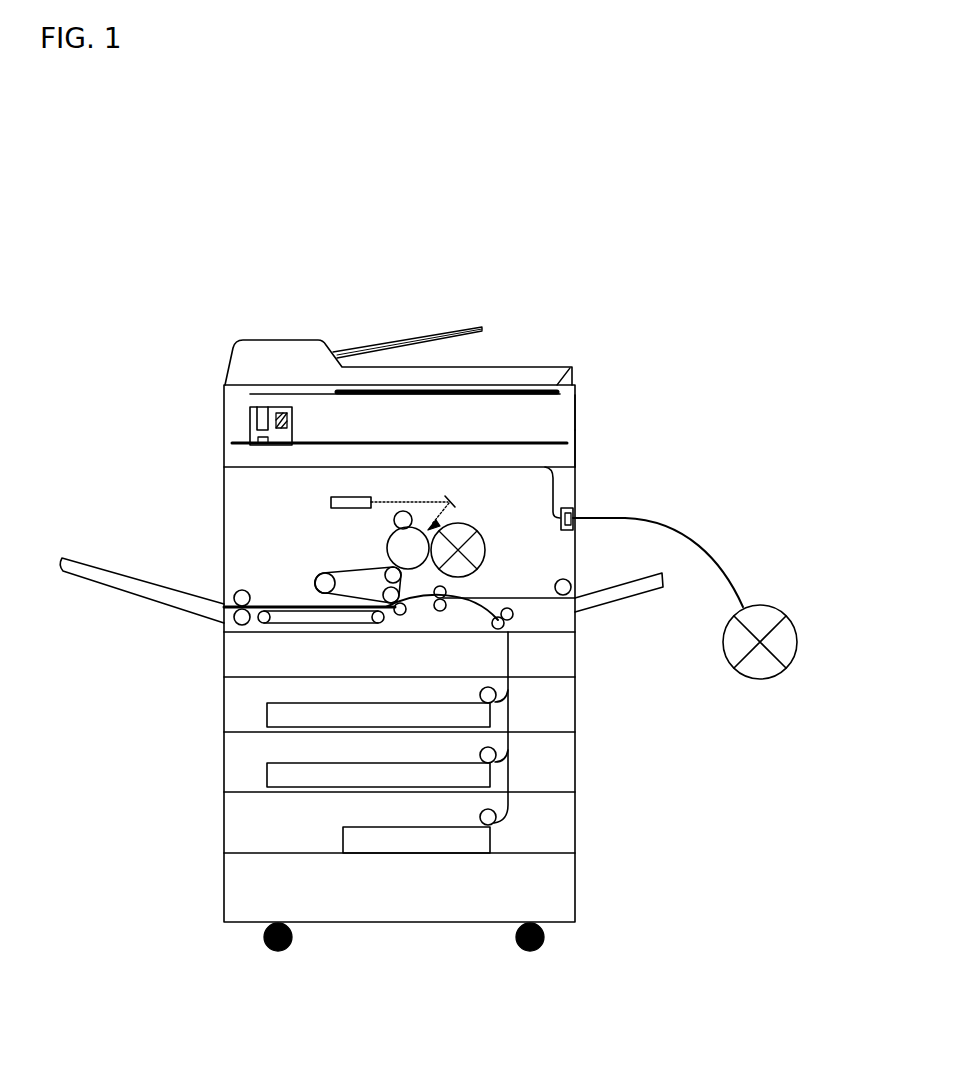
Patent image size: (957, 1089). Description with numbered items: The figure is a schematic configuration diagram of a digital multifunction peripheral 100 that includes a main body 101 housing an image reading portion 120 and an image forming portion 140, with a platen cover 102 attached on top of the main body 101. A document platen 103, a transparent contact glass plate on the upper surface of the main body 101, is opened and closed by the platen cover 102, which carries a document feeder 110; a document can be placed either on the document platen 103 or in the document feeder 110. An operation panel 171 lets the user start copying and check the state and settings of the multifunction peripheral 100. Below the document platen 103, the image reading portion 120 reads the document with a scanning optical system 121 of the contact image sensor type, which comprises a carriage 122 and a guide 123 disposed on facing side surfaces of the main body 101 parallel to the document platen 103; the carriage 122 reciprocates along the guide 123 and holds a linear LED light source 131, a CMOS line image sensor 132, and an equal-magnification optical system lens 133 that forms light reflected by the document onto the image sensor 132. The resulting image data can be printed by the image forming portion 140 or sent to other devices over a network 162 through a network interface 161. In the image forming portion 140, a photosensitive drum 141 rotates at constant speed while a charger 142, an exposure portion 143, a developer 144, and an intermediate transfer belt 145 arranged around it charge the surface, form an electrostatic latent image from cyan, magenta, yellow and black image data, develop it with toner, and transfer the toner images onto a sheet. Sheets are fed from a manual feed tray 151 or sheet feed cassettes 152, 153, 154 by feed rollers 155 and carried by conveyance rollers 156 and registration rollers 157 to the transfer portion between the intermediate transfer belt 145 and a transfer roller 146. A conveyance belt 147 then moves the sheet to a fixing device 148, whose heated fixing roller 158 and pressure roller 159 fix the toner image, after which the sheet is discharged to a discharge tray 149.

The multifunction peripheral 100 is at (568, 279).
The main body 101 is at (207, 478).
The platen cover 102 is at (209, 345).
The document platen 103 is at (506, 386).
The document feeder 110 is at (276, 340).
The image reading portion 120 is at (578, 440).
The scanning optical system 121 is at (569, 412).
The carriage 122 is at (288, 417).
The guide 123 is at (455, 443).
The light source 131 is at (292, 430).
The image sensor 132 is at (262, 446).
The equal-magnification optical system lens 133 is at (253, 410).
The image forming portion 140 is at (578, 478).
The photosensitive drum 141 is at (388, 550).
The charger 142 is at (395, 517).
The exposure portion 143 is at (330, 503).
The developer 144 is at (485, 540).
The intermediate transfer belt 145 is at (324, 572).
The transfer roller 146 is at (402, 616).
The conveyance belt 147 is at (273, 612).
The fixing device 148 is at (186, 583).
The discharge tray 149 is at (80, 565).
The manual feed tray 151 is at (615, 600).
The sheet feed cassette 152 is at (267, 712).
The sheet feed cassette 153 is at (267, 771).
The sheet feed cassette 154 is at (343, 838).
The feed rollers 155 is at (571, 585).
The conveyance rollers 156 is at (514, 617).
The registration rollers 157 is at (443, 612).
The fixing roller 158 is at (236, 592).
The pressure roller 159 is at (237, 612).
The network interface 161 is at (576, 517).
The network 162 is at (776, 609).
The operation panel 171 is at (573, 367).